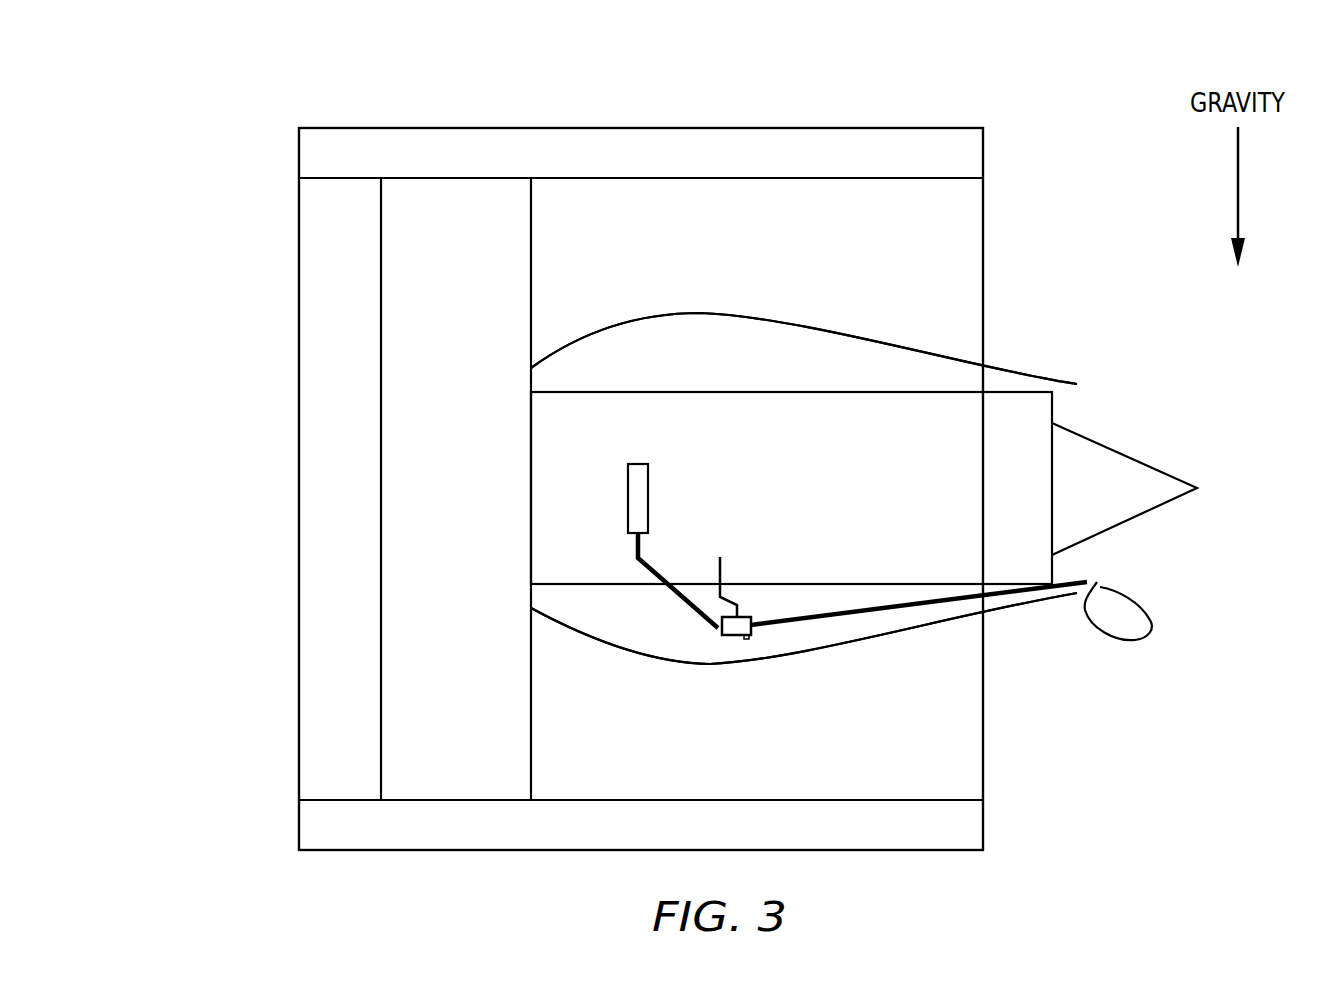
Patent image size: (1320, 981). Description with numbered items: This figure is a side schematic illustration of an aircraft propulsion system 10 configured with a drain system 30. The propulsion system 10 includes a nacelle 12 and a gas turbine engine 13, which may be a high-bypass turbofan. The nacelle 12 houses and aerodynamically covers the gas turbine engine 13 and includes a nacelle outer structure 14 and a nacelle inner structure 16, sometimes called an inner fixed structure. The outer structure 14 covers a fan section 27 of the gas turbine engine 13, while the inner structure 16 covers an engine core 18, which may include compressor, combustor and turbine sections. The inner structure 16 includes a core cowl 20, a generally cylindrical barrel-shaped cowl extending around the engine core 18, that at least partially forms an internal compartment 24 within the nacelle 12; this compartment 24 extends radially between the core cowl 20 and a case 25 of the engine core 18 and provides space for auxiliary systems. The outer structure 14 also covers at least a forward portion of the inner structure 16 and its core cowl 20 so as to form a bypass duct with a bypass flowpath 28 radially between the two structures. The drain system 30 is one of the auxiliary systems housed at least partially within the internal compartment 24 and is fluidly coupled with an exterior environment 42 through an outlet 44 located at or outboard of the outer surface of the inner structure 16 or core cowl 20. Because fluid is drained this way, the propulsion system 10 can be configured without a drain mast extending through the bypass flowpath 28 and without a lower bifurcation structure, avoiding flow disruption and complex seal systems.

The aircraft propulsion system 10 is at (214, 131).
The nacelle 12 is at (379, 102).
The gas turbine engine 13 is at (368, 231).
The nacelle outer structure 14 is at (590, 116).
The nacelle inner structure 16 is at (767, 301).
The engine core 18 is at (899, 385).
The core cowl 20 is at (804, 440).
The internal compartment 24 is at (723, 367).
The case 25 is at (827, 391).
The fan section 27 is at (456, 166).
The bypass flowpath 28 is at (712, 252).
The drain system 30 is at (673, 623).
The exterior environment 42 is at (1135, 728).
The outlet 44 is at (1095, 579).